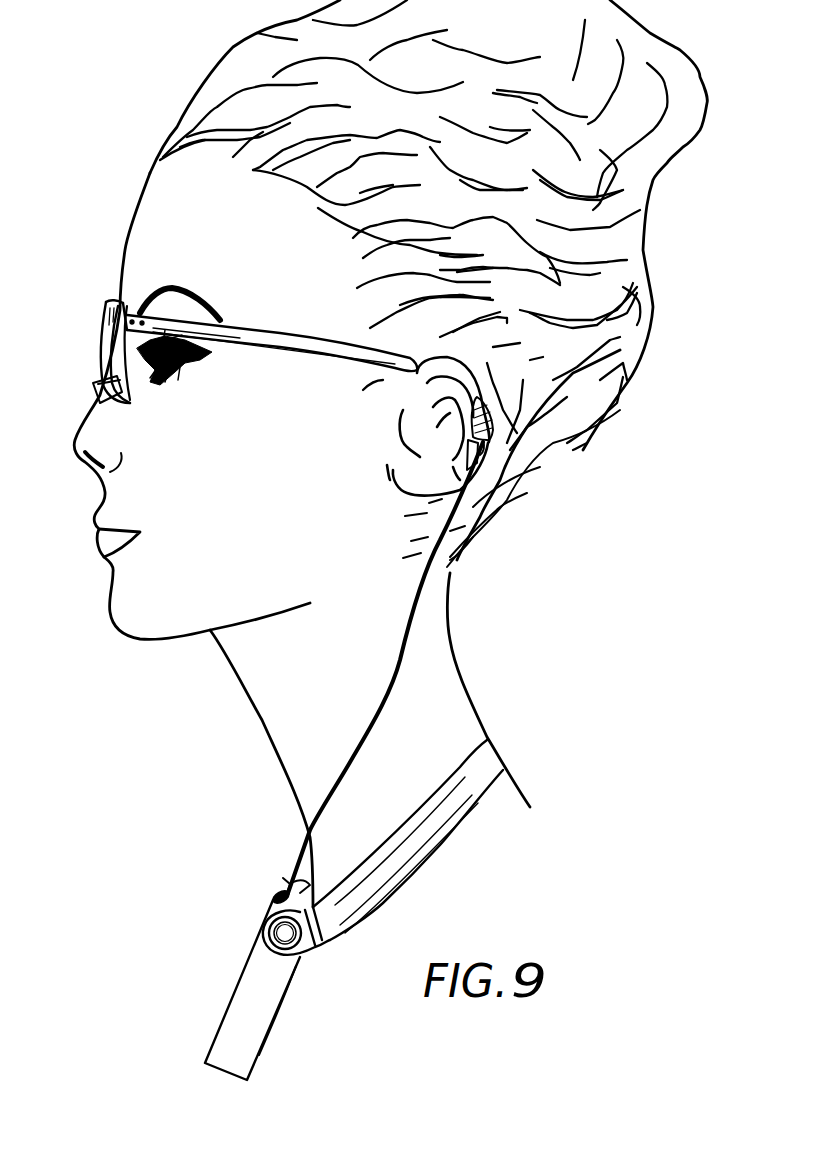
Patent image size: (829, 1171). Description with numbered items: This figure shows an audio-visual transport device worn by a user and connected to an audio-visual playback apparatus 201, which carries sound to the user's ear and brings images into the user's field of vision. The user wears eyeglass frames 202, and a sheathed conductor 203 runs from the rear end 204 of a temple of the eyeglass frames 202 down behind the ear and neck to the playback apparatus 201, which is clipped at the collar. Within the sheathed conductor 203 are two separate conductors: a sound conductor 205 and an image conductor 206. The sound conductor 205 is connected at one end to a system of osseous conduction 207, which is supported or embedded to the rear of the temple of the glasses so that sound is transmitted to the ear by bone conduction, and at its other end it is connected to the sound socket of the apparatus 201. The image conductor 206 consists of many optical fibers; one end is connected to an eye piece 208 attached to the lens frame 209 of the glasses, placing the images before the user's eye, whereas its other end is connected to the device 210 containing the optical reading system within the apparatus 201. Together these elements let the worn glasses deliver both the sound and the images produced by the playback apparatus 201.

The audio-visual playback apparatus 201 is at (257, 980).
The eyeglass frames 202 is at (104, 298).
The sheathed conductor 203 is at (338, 775).
The rear end of a temple 204 is at (489, 426).
The sound conductor 205 is at (456, 472).
The image conductor 206 is at (470, 455).
The system of osseous conduction 207 is at (477, 443).
The eye piece 208 is at (120, 383).
The lens frame 209 is at (107, 346).
The device with the optical reading system 210 is at (273, 896).